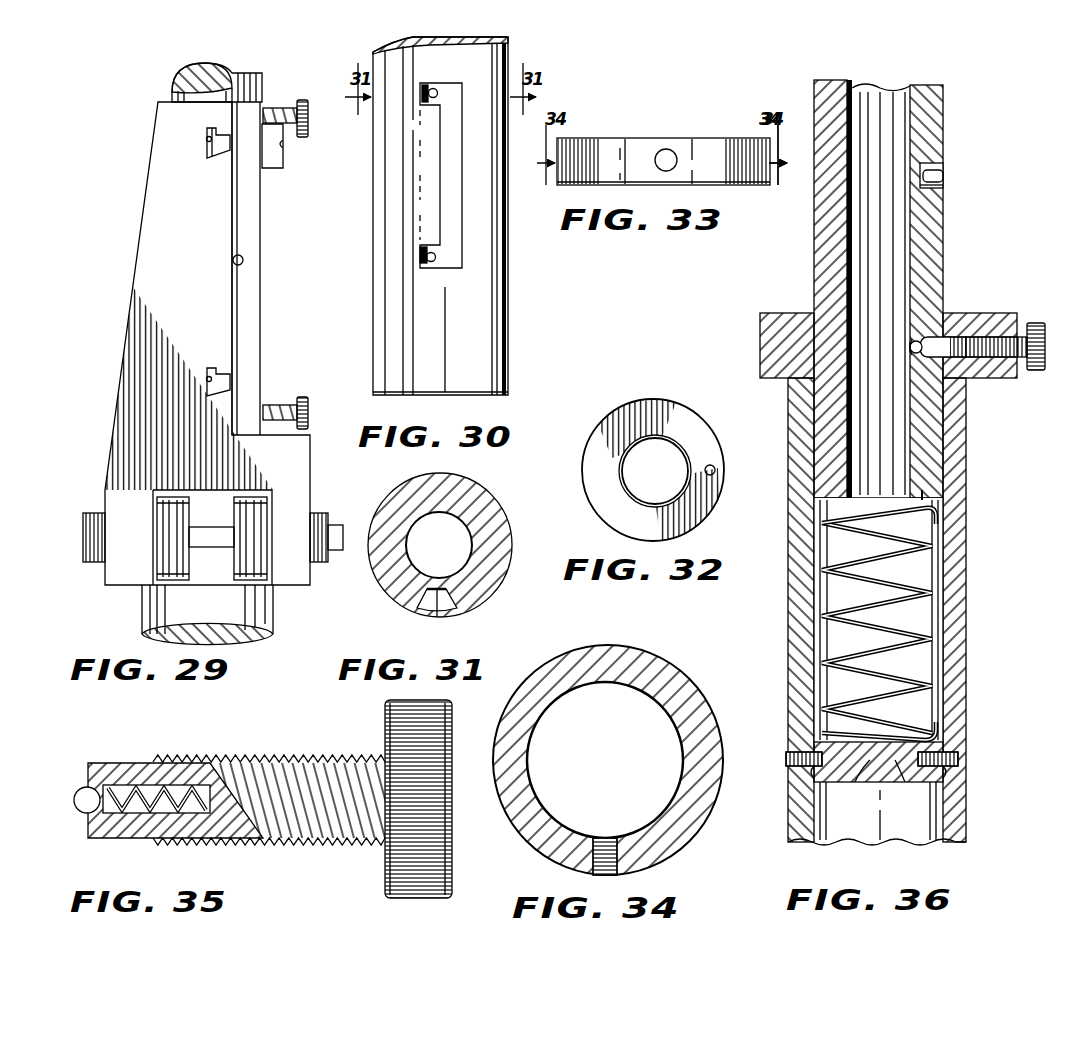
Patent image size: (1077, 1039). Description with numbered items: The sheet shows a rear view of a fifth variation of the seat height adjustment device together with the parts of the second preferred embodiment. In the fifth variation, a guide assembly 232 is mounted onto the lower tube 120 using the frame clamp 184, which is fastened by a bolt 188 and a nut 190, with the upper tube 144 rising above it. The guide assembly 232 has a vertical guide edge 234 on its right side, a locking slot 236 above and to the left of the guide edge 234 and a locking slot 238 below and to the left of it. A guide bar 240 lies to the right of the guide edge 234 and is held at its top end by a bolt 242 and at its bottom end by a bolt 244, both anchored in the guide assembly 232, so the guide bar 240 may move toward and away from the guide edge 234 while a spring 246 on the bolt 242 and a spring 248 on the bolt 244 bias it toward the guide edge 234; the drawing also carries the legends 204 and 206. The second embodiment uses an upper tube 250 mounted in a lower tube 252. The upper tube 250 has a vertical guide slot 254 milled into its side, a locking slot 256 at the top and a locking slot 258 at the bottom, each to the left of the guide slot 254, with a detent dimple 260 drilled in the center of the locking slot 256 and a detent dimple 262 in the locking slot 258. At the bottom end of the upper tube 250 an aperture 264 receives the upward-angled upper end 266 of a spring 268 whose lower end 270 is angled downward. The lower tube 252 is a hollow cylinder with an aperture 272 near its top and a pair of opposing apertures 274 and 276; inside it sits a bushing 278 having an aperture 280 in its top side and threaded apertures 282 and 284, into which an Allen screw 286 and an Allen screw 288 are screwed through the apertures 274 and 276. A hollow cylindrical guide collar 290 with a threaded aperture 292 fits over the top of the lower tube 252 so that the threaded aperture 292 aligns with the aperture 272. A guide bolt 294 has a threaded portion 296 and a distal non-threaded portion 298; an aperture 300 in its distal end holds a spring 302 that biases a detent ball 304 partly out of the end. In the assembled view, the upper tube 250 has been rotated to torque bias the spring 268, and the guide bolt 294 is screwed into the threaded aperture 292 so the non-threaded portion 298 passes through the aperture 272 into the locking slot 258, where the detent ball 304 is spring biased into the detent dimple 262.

In FIG. 29, the lower tube 120 is at (272, 598).
In FIG. 29, the upper tube 144 is at (252, 73).
In FIG. 29, the frame clamp 184 is at (172, 583).
In FIG. 29, the bolt 188 is at (92, 565).
In FIG. 29, the nut 190 is at (316, 565).
In FIG. 29, the clip 204 is at (223, 150).
In FIG. 29, the clip 206 is at (274, 158).
In FIG. 29, the guide assembly 232 is at (92, 483).
In FIG. 29, the vertical guide edge 234 is at (232, 262).
In FIG. 29, the locking slot 236 is at (207, 146).
In FIG. 29, the locking slot 238 is at (207, 373).
In FIG. 29, the guide bar 240 is at (250, 237).
In FIG. 29, the bolt 242 is at (312, 99).
In FIG. 29, the bolt 244 is at (303, 396).
In FIG. 29, the spring 246 is at (268, 108).
In FIG. 29, the spring 248 is at (263, 405).
In FIG. 30, the upper tube 250 is at (513, 198).
In FIG. 31, the upper tube 250 is at (514, 522).
In FIG. 32, the upper tube 250 is at (701, 408).
In FIG. 36, the upper tube 250 is at (935, 238).
In FIG. 36, the lower tube 252 is at (797, 615).
In FIG. 30, the vertical guide slot 254 is at (452, 200).
In FIG. 31, the vertical guide slot 254 is at (448, 597).
In FIG. 36, the vertical guide slot 254 is at (944, 165).
In FIG. 30, the locking slot 256 is at (428, 88).
In FIG. 31, the locking slot 256 is at (430, 600).
In FIG. 36, the locking slot 256 is at (944, 182).
In FIG. 30, the locking slot 258 is at (425, 250).
In FIG. 36, the locking slot 258 is at (920, 338).
In FIG. 30, the detent dimple 260 is at (433, 98).
In FIG. 31, the detent dimple 260 is at (421, 592).
In FIG. 36, the detent dimple 260 is at (944, 175).
In FIG. 30, the detent dimple 262 is at (435, 262).
In FIG. 36, the detent dimple 262 is at (910, 350).
In FIG. 32, the aperture 264 is at (713, 466).
In FIG. 36, the aperture 264 is at (930, 492).
In FIG. 36, the upper end 266 is at (940, 513).
In FIG. 36, the spring 268 is at (926, 590).
In FIG. 36, the lower end 270 is at (937, 728).
In FIG. 36, the aperture 272 is at (968, 313).
In FIG. 36, the aperture 274 is at (800, 772).
In FIG. 36, the aperture 276 is at (950, 768).
In FIG. 36, the bushing 278 is at (862, 800).
In FIG. 36, the aperture 280 is at (932, 746).
In FIG. 36, the threaded aperture 282 is at (888, 780).
In FIG. 36, the threaded aperture 284 is at (880, 783).
In FIG. 36, the Allen screw 286 is at (788, 760).
In FIG. 36, the Allen screw 288 is at (958, 758).
In FIG. 33, the guide collar 290 is at (640, 128).
In FIG. 34, the guide collar 290 is at (504, 820).
In FIG. 36, the guide collar 290 is at (778, 315).
In FIG. 33, the threaded aperture 292 is at (665, 150).
In FIG. 34, the threaded aperture 292 is at (615, 871).
In FIG. 36, the threaded aperture 292 is at (960, 378).
In FIG. 35, the guide bolt 294 is at (267, 803).
In FIG. 36, the guide bolt 294 is at (958, 328).
In FIG. 35, the threaded portion 296 is at (290, 845).
In FIG. 36, the threaded portion 296 is at (1005, 337).
In FIG. 35, the non-threaded portion 298 is at (130, 840).
In FIG. 36, the non-threaded portion 298 is at (922, 358).
In FIG. 35, the aperture 300 is at (140, 786).
In FIG. 35, the spring 302 is at (168, 788).
In FIG. 35, the detent ball 304 is at (80, 787).
In FIG. 36, the detent ball 304 is at (911, 345).